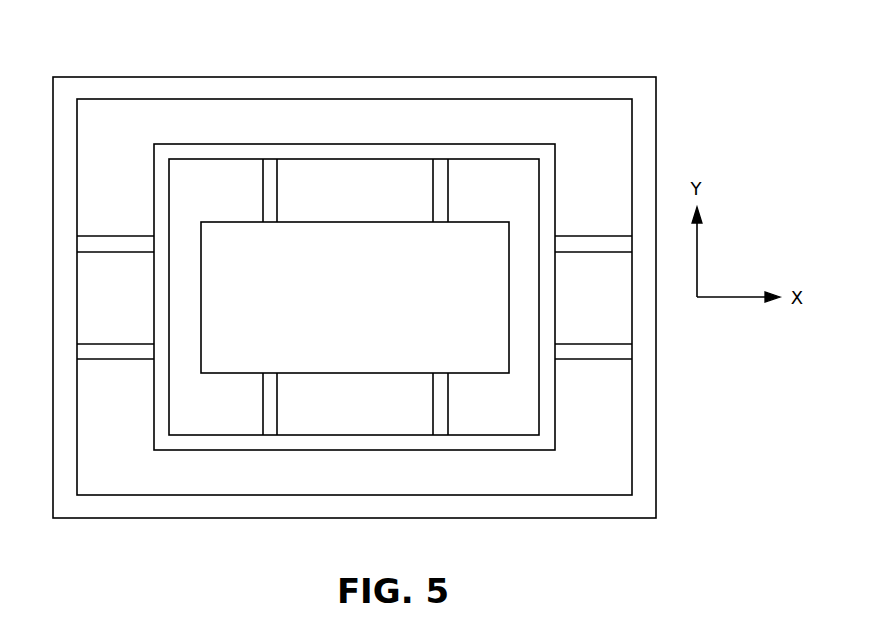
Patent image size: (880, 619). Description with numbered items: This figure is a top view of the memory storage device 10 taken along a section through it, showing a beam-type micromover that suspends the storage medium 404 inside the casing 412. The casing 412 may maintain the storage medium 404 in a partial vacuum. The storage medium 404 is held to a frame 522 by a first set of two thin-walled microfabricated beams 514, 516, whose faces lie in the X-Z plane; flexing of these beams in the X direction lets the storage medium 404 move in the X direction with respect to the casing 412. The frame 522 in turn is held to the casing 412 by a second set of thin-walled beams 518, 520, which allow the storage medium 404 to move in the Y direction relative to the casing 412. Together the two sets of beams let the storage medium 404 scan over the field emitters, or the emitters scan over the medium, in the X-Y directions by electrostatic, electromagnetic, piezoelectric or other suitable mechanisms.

The package assembly 10 is at (716, 63).
The casing 412 is at (647, 436).
The frame 522 is at (555, 176).
The storage medium 404 is at (337, 308).
The thin-walled microfabricated beam 514 is at (278, 205).
The thin-walled microfabricated beam 516 is at (448, 205).
The thin-walled microfabricated beam 518 is at (592, 236).
The thin-walled microfabricated beam 520 is at (593, 359).